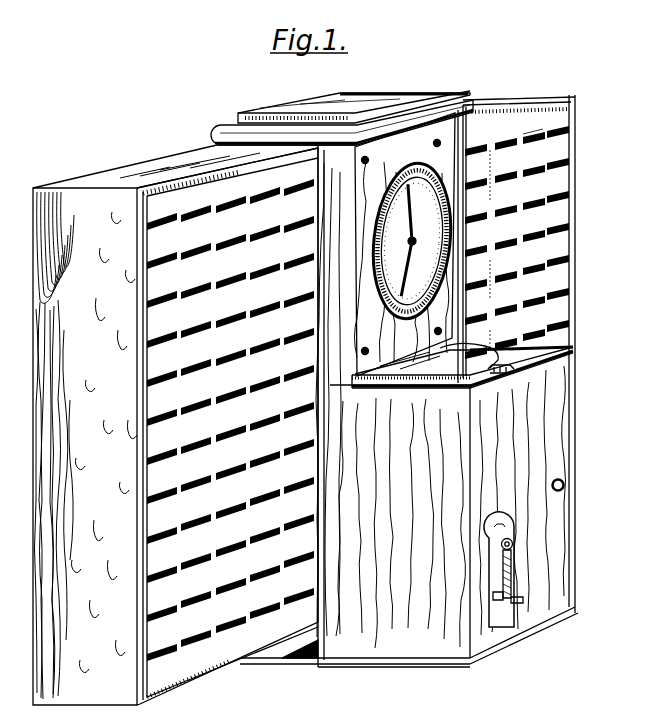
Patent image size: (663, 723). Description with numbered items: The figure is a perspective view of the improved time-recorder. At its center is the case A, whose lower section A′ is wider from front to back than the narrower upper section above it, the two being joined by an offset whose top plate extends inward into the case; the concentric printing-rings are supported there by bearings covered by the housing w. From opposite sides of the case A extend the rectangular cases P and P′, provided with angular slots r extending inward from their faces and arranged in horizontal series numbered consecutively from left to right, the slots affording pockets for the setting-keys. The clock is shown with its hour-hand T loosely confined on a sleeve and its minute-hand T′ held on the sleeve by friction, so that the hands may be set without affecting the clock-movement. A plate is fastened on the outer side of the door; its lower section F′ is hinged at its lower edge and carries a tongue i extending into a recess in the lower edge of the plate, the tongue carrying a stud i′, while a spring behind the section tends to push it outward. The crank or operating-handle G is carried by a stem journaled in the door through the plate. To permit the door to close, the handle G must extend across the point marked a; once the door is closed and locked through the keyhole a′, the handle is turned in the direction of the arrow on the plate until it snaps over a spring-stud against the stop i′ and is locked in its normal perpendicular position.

The rectangular case P is at (175, 417).
The rectangular case P′ is at (519, 218).
The case A is at (428, 378).
The lower section A′ is at (400, 521).
The hour-hand T is at (410, 253).
The minute-hand T′ is at (393, 177).
The angular slots r is at (554, 160).
The housing w is at (469, 355).
The point a is at (512, 371).
The keyhole a′ is at (565, 484).
The lower section of plate F′ is at (489, 560).
The crank G is at (510, 577).
The tongue i is at (500, 596).
The stud i′ is at (496, 610).